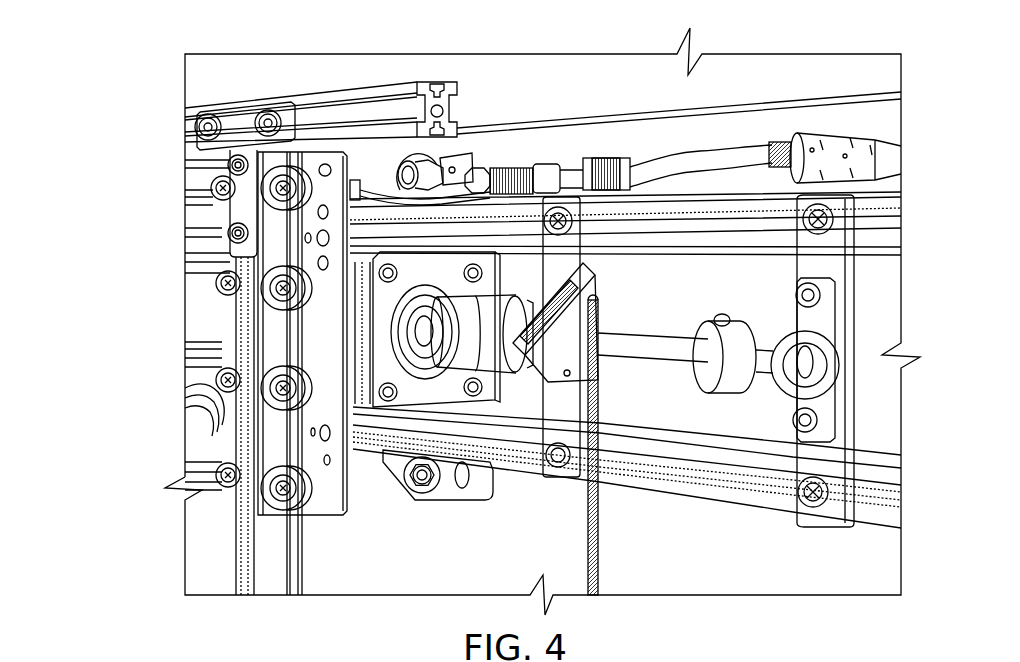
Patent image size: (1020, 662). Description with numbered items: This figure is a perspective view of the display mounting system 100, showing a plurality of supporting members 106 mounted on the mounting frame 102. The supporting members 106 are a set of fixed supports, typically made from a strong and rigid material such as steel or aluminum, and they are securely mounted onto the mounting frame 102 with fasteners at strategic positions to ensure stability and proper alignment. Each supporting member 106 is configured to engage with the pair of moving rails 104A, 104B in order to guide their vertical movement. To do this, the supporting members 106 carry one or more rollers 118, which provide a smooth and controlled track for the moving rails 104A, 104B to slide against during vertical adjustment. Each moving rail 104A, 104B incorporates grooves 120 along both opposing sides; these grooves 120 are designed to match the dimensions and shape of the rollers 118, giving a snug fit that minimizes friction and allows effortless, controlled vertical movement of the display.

The display mounting system 100 is at (234, 40).
The mounting frame 102 is at (897, 502).
The moving rail 104A is at (240, 347).
The moving rail 104B is at (183, 426).
The supporting member 106 is at (313, 428).
The roller 118 is at (275, 190).
The groove 120 is at (277, 562).